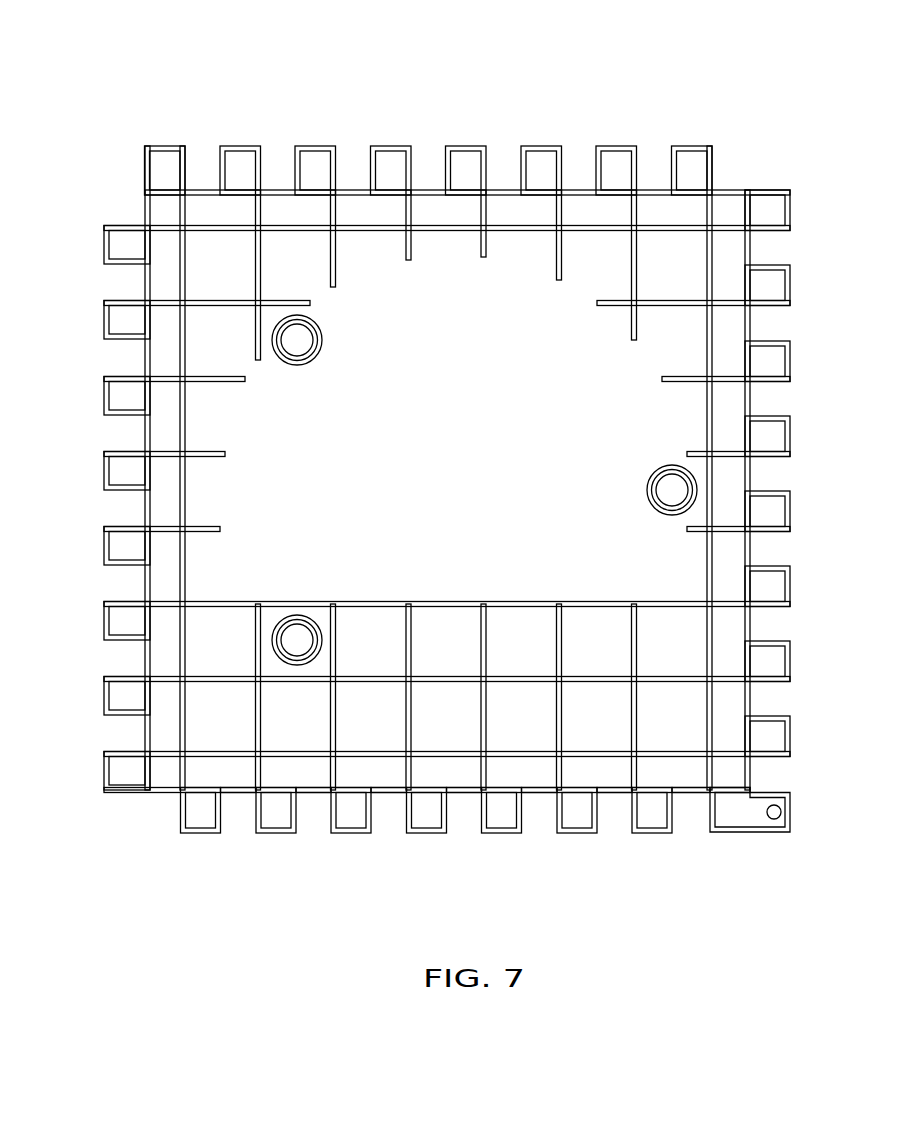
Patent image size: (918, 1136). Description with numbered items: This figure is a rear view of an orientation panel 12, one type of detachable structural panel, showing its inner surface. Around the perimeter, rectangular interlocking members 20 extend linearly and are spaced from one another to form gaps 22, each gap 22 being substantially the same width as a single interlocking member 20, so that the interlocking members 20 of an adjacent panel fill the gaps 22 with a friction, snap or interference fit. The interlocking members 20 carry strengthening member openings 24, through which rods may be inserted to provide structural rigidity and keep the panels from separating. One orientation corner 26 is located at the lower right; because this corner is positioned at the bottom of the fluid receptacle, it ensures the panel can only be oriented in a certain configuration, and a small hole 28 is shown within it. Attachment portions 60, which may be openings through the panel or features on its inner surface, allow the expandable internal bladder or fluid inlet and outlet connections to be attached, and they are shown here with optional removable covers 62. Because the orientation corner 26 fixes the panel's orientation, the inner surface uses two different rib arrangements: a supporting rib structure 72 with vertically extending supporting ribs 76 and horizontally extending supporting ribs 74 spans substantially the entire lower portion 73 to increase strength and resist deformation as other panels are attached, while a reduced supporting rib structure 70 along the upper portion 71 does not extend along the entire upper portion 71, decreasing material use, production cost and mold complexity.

The orientation panel 12 is at (268, 98).
The interlocking members 20 is at (200, 833).
The gaps 22 is at (235, 793).
The strengthening member openings 24 is at (120, 210).
The orientation corner 26 is at (803, 812).
The locating hole 28 is at (774, 819).
The attachment portions 60 is at (322, 342).
The removable covers 62 is at (297, 358).
The supporting rib structure 70 is at (497, 294).
The upper portion 71 is at (92, 270).
The supporting rib structure 72 is at (463, 576).
The lower portion 73 is at (92, 637).
The supporting ribs 74 is at (535, 601).
The supporting ribs 76 is at (254, 648).